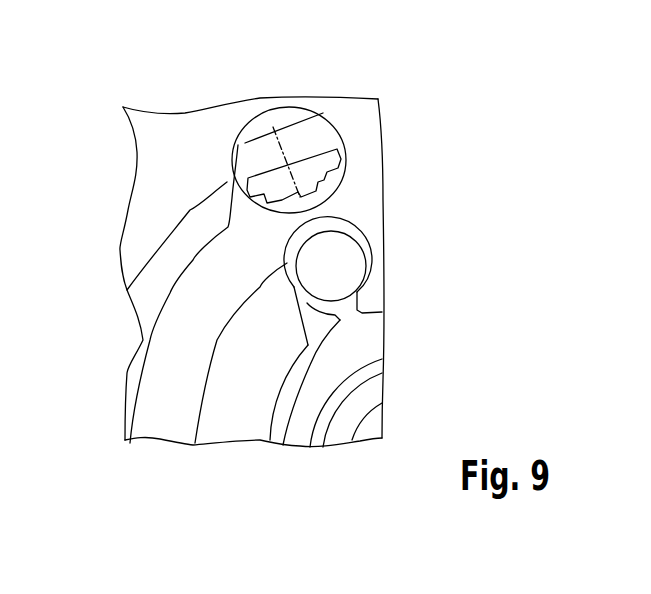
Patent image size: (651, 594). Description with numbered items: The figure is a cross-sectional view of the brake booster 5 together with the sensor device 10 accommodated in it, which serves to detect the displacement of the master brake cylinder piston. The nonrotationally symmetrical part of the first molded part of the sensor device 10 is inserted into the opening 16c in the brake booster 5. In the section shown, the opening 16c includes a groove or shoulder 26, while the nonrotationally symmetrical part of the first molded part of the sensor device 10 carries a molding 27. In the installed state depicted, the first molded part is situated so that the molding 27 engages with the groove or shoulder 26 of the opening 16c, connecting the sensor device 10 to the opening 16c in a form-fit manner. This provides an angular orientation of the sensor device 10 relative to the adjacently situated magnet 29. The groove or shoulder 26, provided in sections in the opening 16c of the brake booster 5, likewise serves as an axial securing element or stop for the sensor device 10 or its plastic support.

The brake booster 5 is at (453, 80).
The sensor device 10 is at (283, 190).
The opening 16c is at (337, 174).
The groove or shoulder 26 is at (252, 162).
The molding 27 is at (238, 145).
The magnet 29 is at (323, 272).